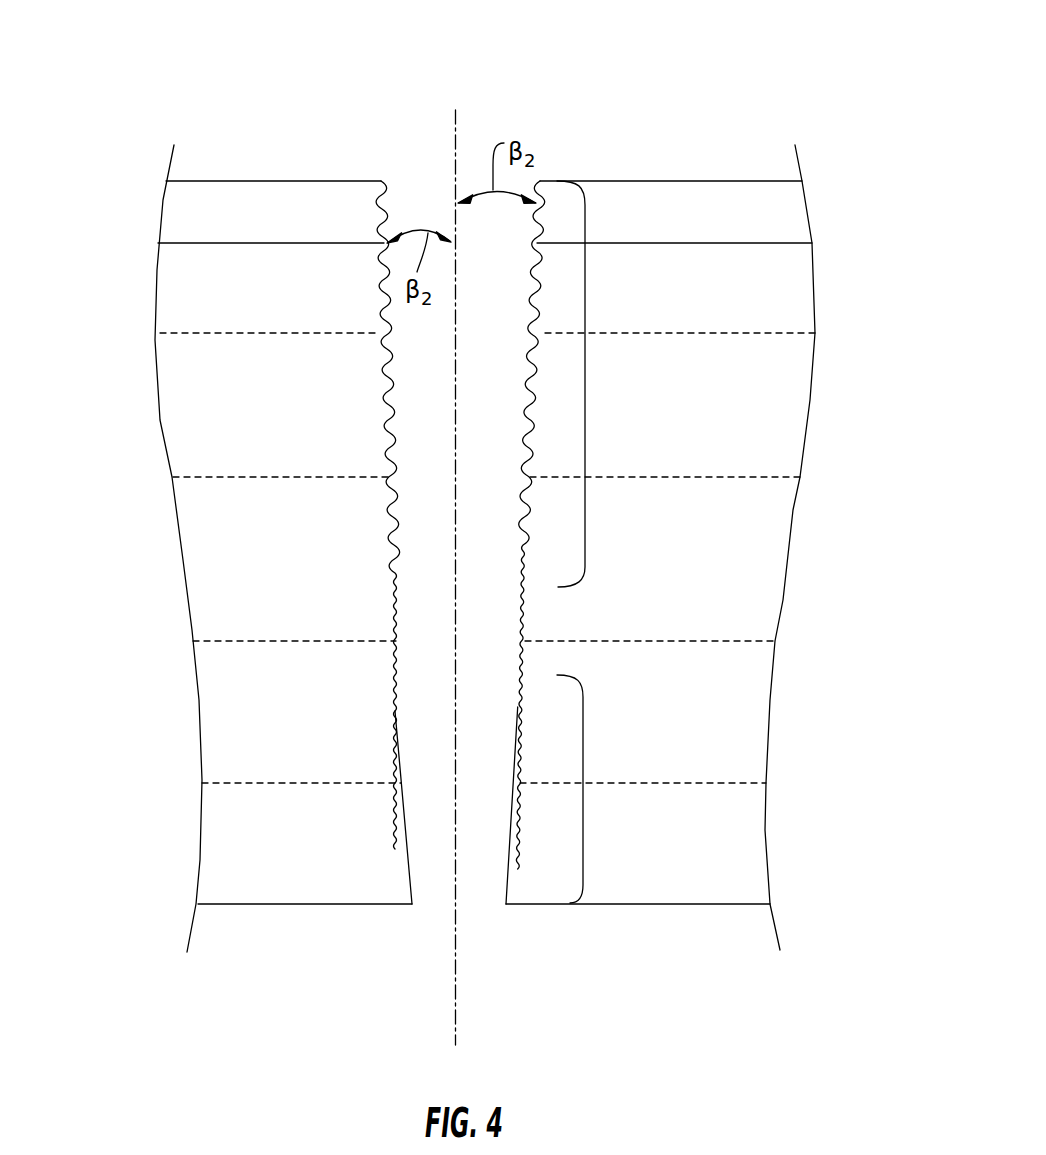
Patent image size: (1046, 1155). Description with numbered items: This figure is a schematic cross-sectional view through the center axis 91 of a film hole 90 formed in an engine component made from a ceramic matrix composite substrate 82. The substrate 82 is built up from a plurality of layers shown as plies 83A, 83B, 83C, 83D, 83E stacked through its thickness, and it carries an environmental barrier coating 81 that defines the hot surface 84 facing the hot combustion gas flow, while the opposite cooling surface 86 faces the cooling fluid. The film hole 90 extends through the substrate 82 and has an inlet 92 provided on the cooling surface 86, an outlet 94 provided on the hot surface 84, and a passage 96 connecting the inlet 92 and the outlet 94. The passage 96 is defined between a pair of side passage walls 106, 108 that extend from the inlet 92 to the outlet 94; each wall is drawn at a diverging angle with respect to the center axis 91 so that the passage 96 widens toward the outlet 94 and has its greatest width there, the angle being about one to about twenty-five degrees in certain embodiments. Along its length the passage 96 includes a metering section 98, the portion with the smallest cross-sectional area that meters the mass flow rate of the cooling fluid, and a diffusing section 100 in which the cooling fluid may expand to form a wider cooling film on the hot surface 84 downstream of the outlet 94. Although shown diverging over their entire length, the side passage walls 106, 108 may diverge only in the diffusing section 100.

The environmental barrier coating 81 is at (808, 198).
The substrate 82 is at (790, 413).
The ply 83A is at (195, 283).
The ply 83B is at (195, 425).
The ply 83C is at (205, 577).
The ply 83D is at (215, 715).
The ply 83E is at (215, 873).
The hot surface 84 is at (685, 160).
The cooling surface 86 is at (276, 923).
The film hole 90 is at (512, 80).
The center axis 91 is at (459, 1018).
The inlet 92 is at (435, 928).
The outlet 94 is at (416, 167).
The passage 96 is at (408, 641).
The metering section 98 is at (583, 780).
The diffusing section 100 is at (585, 385).
The side passage wall 106 is at (398, 584).
The side passage wall 108 is at (519, 472).